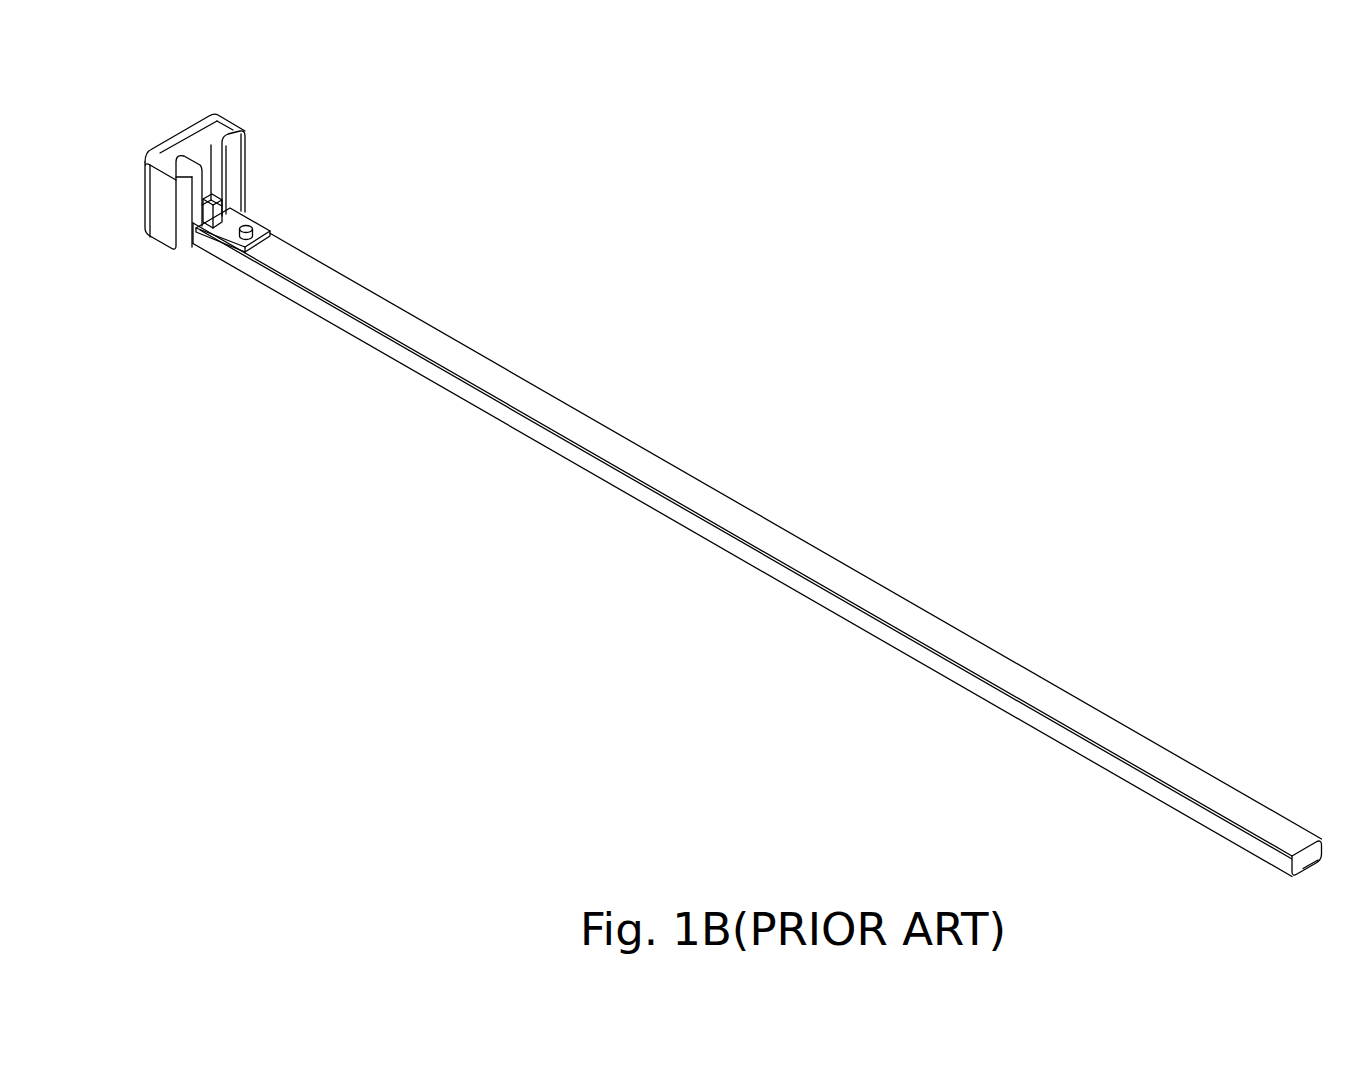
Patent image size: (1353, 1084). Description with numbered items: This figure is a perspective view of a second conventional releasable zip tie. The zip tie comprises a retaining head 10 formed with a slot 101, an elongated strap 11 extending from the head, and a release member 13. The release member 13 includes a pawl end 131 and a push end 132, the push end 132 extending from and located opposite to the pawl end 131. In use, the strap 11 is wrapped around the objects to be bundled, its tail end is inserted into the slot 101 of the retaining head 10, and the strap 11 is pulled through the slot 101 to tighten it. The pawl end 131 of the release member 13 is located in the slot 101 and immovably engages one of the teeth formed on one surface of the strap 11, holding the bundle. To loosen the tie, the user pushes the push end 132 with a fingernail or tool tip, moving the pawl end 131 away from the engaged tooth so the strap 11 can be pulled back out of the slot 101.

The retaining head 10 is at (200, 150).
The slot 101 is at (211, 141).
The strap 11 is at (830, 563).
The release member 13 is at (315, 187).
The pawl end 131 is at (232, 221).
The push end 132 is at (268, 230).